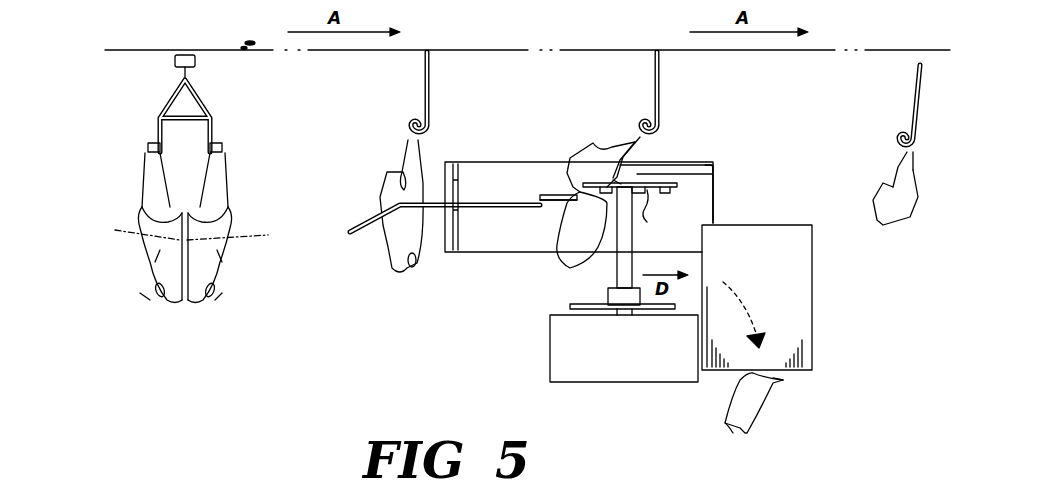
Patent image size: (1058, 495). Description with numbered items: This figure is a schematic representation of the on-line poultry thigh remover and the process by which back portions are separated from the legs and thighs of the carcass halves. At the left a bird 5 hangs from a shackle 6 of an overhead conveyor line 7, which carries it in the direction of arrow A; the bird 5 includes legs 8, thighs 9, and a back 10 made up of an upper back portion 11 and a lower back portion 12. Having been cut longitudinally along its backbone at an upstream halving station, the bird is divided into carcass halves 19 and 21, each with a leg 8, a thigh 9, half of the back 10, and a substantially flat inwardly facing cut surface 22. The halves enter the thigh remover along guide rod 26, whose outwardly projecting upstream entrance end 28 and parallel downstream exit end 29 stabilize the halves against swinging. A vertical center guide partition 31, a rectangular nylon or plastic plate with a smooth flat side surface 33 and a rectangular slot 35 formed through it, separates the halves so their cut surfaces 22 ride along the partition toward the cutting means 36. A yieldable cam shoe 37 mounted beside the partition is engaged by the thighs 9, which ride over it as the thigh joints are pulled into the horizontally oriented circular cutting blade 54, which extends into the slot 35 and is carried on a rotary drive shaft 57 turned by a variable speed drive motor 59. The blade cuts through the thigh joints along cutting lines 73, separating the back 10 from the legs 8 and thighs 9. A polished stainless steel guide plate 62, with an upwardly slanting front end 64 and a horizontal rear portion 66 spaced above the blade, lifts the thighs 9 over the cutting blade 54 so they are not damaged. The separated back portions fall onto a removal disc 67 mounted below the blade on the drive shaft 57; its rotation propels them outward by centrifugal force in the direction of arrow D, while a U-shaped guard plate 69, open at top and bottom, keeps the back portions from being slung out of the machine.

The bird 5 is at (257, 152).
The shackle 6 is at (177, 90).
The overhead conveyor line 7 is at (505, 50).
The legs 8 is at (150, 168).
The thighs 9 is at (143, 207).
The back 10 is at (162, 270).
The upper back portion 11 is at (158, 292).
The lower back portion 12 is at (160, 250).
The carcass half 19 is at (140, 293).
The carcass half 21 is at (223, 292).
The cut surface 22 is at (183, 302).
The guide rod 26 is at (412, 268).
The upstream entrance end 28 is at (358, 236).
The downstream exit end 29 is at (537, 212).
The vertical center guide partition 31 is at (468, 162).
The side surface 33 is at (512, 246).
The rectangular slot 35 is at (649, 218).
The cutting means 36 is at (693, 200).
The yieldable cam shoe 37 is at (540, 197).
The cutting blade 54 is at (667, 190).
The rotary drive shaft 57 is at (617, 270).
The variable speed drive motor 59 is at (626, 363).
The guide plate 62 is at (693, 165).
The upwardly slanting front end 64 is at (617, 182).
The horizontal rear portion 66 is at (714, 163).
The removal disc 67 is at (565, 302).
The U-shaped guard plate 69 is at (813, 277).
The cutting line 73 is at (193, 234).